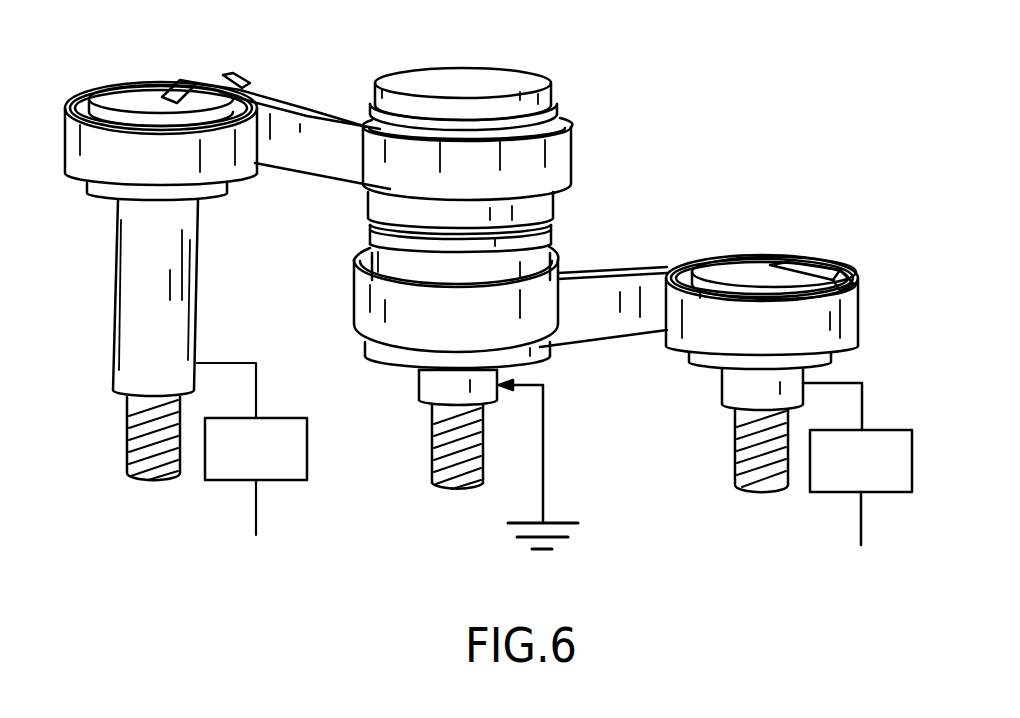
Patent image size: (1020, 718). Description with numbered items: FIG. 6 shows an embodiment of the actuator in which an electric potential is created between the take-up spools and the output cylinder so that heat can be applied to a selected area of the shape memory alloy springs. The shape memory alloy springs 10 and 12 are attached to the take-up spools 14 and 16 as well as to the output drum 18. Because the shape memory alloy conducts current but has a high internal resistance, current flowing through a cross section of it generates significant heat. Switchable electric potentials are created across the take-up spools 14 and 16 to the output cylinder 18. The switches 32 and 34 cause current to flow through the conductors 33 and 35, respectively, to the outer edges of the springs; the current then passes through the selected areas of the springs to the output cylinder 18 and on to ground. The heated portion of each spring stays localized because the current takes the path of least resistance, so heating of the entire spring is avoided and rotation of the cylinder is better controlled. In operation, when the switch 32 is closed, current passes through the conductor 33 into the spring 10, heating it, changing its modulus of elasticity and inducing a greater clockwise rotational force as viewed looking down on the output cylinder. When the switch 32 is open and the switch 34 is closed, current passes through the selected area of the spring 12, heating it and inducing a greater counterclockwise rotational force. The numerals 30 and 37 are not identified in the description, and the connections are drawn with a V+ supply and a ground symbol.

The shape memory alloy spring 10 is at (293, 99).
The shape memory alloy spring 12 is at (555, 350).
The take-up spool 14 is at (93, 187).
The take-up spool 16 is at (830, 357).
The output drum 18 is at (563, 211).
The left switch lead / V+ connection 30 is at (253, 505).
The switch 32 is at (307, 470).
The conductor 33 is at (187, 78).
The switch 34 is at (722, 385).
The conductor 35 is at (812, 265).
The center nut (ground connection) 37 is at (417, 385).